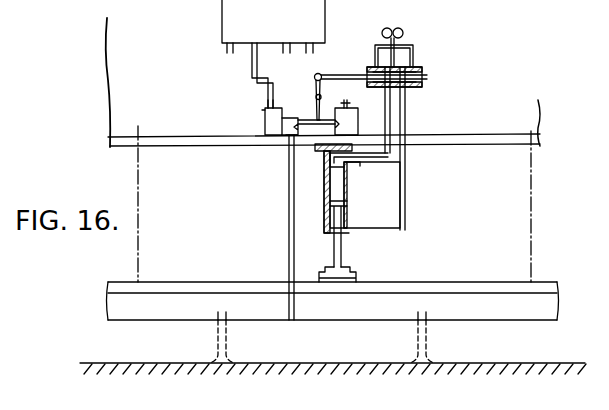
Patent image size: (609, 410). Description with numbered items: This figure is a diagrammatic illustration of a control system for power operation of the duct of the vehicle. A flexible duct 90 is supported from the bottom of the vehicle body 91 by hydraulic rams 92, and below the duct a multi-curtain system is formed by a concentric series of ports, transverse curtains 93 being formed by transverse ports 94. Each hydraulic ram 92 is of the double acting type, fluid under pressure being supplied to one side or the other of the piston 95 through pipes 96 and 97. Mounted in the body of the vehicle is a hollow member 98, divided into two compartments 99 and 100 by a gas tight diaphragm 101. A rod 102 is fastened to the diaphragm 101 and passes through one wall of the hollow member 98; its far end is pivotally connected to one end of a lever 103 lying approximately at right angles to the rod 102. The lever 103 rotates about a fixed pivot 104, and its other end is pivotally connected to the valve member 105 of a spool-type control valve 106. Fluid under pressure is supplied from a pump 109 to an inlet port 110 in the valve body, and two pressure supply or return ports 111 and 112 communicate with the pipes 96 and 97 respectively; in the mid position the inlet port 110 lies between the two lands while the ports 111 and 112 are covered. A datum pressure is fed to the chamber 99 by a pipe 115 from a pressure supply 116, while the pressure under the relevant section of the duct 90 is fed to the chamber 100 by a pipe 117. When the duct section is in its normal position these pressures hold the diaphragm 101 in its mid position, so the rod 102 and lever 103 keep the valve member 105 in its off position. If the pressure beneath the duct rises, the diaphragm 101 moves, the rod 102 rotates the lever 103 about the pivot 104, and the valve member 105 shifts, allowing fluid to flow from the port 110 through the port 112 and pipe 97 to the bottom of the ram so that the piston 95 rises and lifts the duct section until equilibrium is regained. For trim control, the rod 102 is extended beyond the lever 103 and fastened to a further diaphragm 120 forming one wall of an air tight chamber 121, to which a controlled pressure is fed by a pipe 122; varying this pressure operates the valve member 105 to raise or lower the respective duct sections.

The flexible duct 90 is at (552, 308).
The vehicle body 91 is at (540, 141).
The hydraulic ram 92 is at (347, 203).
The transverse curtain 93 is at (429, 339).
The transverse port 94 is at (417, 319).
The piston 95 is at (330, 206).
The pipe 96 is at (362, 166).
The pipe 97 is at (404, 205).
The hollow member 98 is at (265, 120).
The compartment 99 is at (262, 110).
The compartment 100 is at (286, 112).
The diaphragm 101 is at (277, 103).
The rod 102 is at (289, 160).
The lever 103 is at (316, 74).
The fixed pivot 104 is at (326, 94).
The valve member 105 is at (350, 73).
The control valve 106 is at (419, 70).
The pump 109 is at (399, 26).
The inlet port 110 is at (398, 64).
The pressure supply or return port 111 is at (389, 100).
The pressure supply or return port 112 is at (399, 88).
The pipe 115 is at (251, 58).
The pressure supply 116 is at (222, 12).
The pipe 117 is at (289, 233).
The further diaphragm 120 is at (316, 143).
The air tight chamber 121 is at (363, 118).
The pipe 122 is at (350, 100).